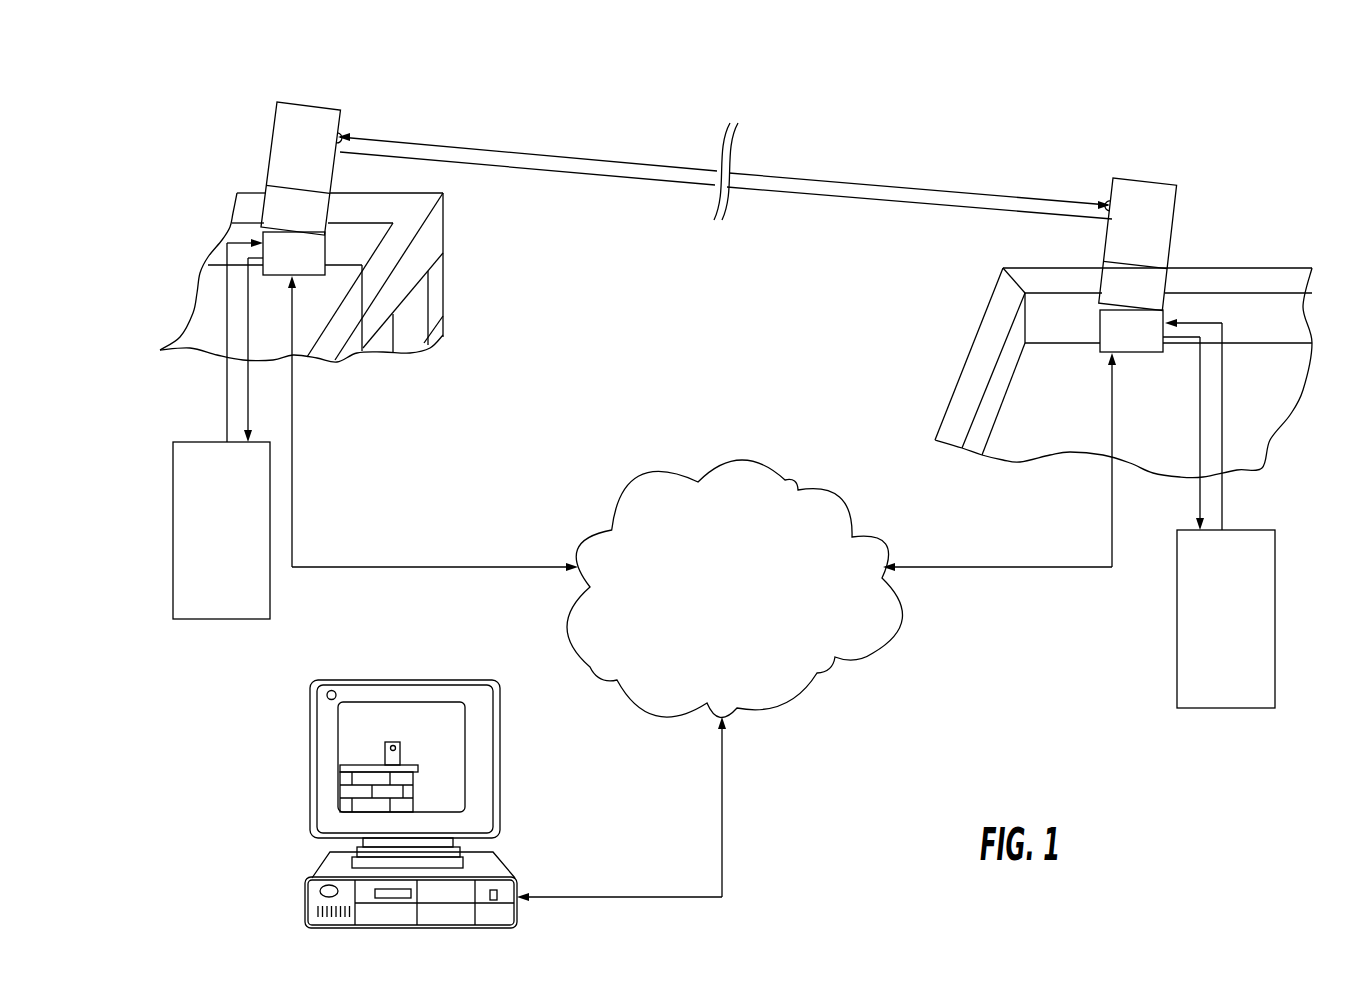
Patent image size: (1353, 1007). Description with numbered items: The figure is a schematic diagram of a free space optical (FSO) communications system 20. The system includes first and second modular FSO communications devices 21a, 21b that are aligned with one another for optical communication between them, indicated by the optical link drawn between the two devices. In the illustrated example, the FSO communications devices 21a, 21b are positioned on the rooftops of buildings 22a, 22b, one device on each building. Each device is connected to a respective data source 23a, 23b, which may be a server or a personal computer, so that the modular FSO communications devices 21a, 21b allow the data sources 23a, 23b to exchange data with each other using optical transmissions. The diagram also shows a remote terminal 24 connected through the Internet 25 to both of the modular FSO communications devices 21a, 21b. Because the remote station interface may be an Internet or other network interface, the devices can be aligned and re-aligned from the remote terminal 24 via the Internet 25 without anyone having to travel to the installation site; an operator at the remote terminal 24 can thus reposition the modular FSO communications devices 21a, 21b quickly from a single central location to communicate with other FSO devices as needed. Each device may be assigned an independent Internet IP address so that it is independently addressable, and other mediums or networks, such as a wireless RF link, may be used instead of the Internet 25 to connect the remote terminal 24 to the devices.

The free space optical (FSO) communications system 20 is at (1155, 146).
The first modular FSO communications device 21a is at (290, 101).
The second modular FSO communications device 21b is at (1176, 242).
The building 22a is at (444, 231).
The building 22b is at (974, 341).
The data source 23a is at (193, 619).
The data source 23b is at (1252, 709).
The remote terminal 24 is at (306, 897).
The Internet 25 is at (803, 695).